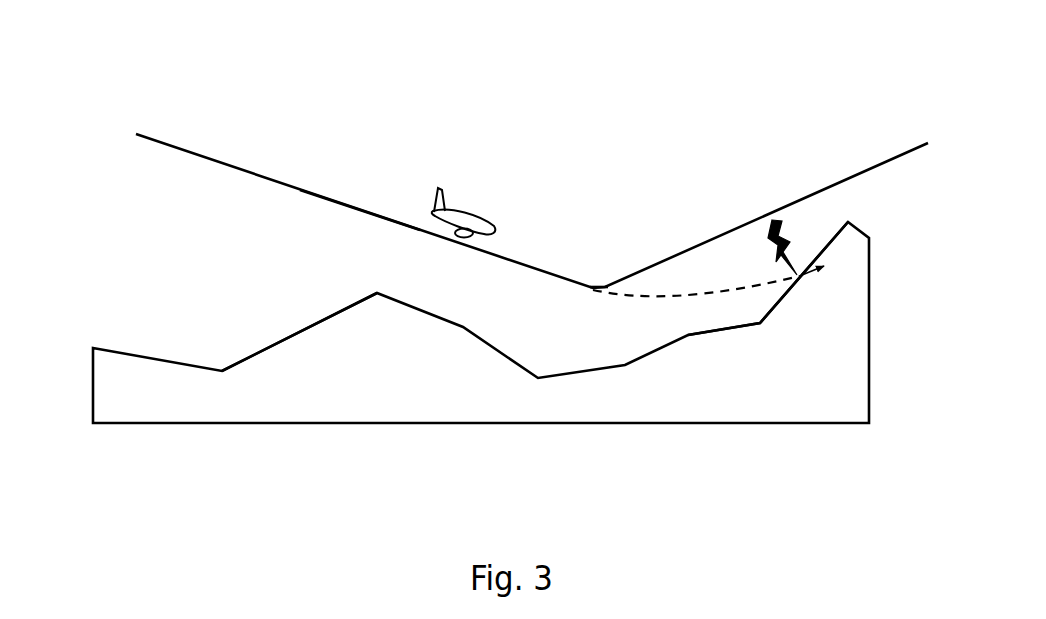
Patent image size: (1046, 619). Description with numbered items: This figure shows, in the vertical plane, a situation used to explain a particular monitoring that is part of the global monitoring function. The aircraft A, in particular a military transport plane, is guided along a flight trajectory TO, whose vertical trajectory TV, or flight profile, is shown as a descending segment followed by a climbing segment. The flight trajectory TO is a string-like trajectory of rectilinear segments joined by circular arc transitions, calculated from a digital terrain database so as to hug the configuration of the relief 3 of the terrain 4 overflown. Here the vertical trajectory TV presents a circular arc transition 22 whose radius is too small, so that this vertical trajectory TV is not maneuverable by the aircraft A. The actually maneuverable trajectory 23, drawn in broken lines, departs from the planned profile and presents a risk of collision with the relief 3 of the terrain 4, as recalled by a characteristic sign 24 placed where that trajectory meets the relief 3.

The relief 3 is at (280, 328).
The terrain 4 is at (315, 380).
The circular arc transition 22 is at (607, 277).
The actually maneuverable trajectory 23 is at (655, 298).
The characteristic sign 24 is at (790, 240).
The aircraft A is at (470, 217).
The flight trajectory TO is at (309, 149).
The vertical trajectory TV is at (305, 192).